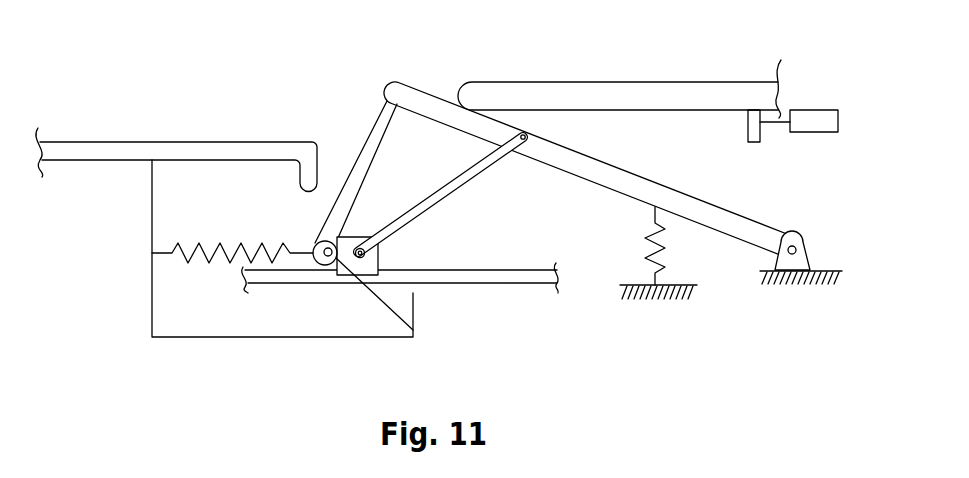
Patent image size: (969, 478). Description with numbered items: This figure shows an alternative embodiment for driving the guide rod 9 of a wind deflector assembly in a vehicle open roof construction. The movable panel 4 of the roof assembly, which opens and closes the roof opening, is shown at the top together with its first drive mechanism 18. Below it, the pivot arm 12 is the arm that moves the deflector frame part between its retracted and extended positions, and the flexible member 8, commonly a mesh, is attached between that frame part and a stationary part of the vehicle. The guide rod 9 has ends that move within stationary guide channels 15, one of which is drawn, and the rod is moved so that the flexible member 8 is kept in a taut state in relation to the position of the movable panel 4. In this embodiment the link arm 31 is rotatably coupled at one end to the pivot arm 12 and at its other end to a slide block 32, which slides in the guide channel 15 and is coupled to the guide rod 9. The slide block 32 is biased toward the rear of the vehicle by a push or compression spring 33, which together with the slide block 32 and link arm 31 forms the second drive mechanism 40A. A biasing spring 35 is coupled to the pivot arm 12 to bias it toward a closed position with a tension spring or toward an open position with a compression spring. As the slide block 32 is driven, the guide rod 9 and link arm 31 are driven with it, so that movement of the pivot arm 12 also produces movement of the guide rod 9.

The movable panel 4 is at (662, 82).
The flexible member 8 is at (362, 153).
The guide rod 9 is at (330, 257).
The pivot arm 12 is at (418, 97).
The guide channel 15 is at (497, 282).
The first drive mechanism 18 is at (827, 110).
The link arm 31 is at (433, 210).
The slide block 32 is at (348, 263).
The push or compression spring 33 is at (208, 263).
The biasing spring 35 is at (667, 248).
The second drive mechanism 40A is at (196, 233).